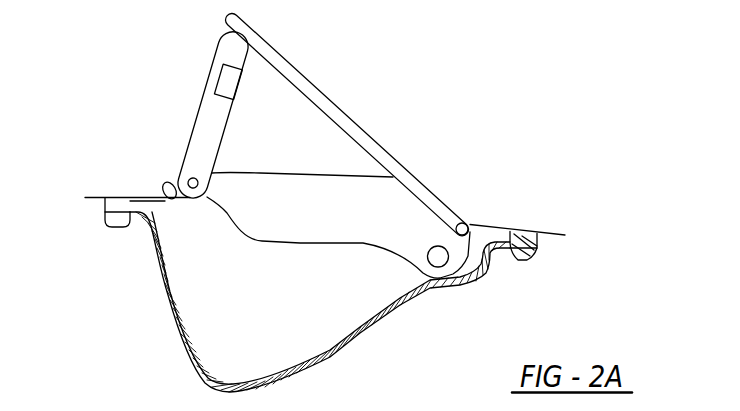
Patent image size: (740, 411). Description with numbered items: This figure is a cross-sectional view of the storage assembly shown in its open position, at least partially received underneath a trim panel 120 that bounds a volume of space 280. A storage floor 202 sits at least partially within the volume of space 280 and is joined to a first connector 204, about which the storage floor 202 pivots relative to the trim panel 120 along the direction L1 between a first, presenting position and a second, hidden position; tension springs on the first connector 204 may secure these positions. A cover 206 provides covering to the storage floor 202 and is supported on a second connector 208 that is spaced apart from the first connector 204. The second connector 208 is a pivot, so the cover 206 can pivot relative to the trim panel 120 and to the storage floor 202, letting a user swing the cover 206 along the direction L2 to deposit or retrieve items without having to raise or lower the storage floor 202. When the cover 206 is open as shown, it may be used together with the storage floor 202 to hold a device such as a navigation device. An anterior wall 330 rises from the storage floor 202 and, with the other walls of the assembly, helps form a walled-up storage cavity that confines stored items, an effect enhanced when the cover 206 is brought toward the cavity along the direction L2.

The trim panel 120 is at (147, 194).
The storage floor 202 is at (293, 246).
The first connector 204 is at (451, 272).
The cover 206 is at (319, 97).
The second connector 208 is at (478, 211).
The volume of space 280 is at (232, 352).
The anterior wall 330 is at (186, 212).
The direction L1 is at (186, 262).
The direction L2 is at (186, 50).